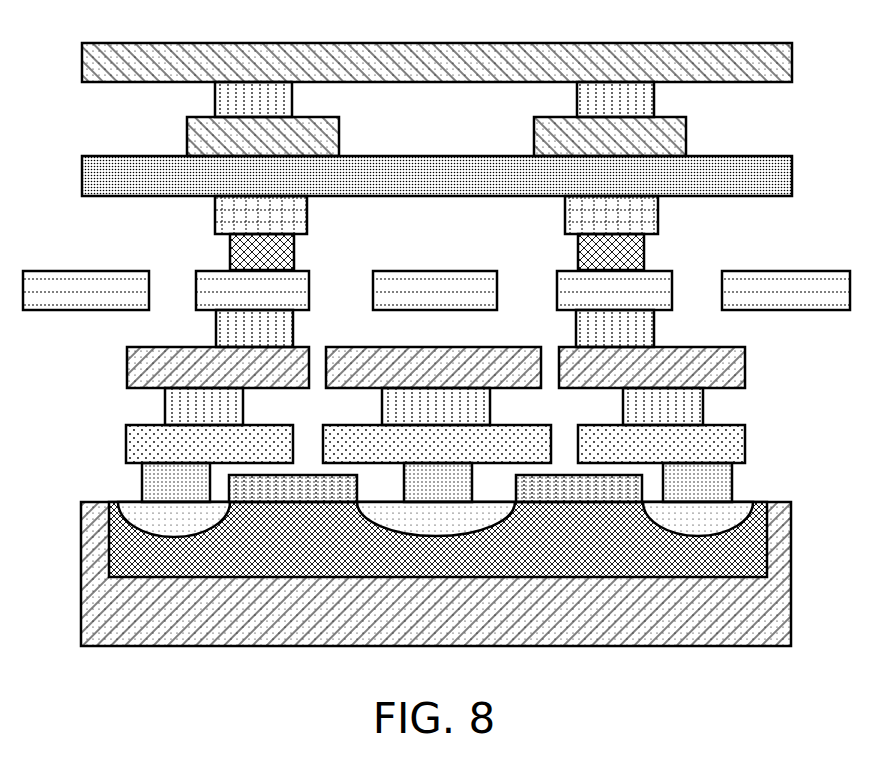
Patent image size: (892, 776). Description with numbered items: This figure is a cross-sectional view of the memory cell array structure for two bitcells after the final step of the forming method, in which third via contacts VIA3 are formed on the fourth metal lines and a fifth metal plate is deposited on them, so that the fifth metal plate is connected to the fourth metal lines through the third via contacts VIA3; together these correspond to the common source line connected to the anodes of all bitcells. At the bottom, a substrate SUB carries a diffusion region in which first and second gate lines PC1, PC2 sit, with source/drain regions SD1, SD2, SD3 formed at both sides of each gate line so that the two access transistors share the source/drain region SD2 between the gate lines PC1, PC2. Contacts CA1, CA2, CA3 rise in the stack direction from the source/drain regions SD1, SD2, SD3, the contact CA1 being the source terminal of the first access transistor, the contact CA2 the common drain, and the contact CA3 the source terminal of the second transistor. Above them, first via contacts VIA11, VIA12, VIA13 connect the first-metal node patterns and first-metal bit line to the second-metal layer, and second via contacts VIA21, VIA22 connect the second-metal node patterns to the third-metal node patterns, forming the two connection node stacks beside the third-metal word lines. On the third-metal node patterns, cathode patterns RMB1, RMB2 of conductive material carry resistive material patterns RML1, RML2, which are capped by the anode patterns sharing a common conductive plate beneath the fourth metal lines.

The third via contacts VIA3 is at (434, 99).
The resistive material pattern RML1 is at (261, 215).
The resistive material pattern RML2 is at (611, 215).
The cathode pattern RMB1 is at (262, 252).
The cathode pattern RMB2 is at (611, 252).
The second via contact VIA21 is at (254, 328).
The second via contact VIA22 is at (615, 328).
The first via contact VIA11 is at (204, 406).
The first via contact VIA12 is at (436, 406).
The first via contact VIA13 is at (663, 406).
The contact CA1 is at (176, 482).
The contact CA2 is at (438, 482).
The contact CA3 is at (697, 482).
The first gate line PC1 is at (293, 488).
The second gate line PC2 is at (579, 488).
The source/drain region SD1 is at (174, 519).
The source/drain region SD2 is at (436, 519).
The source/drain region SD3 is at (698, 519).
The substrate SUB is at (436, 574).